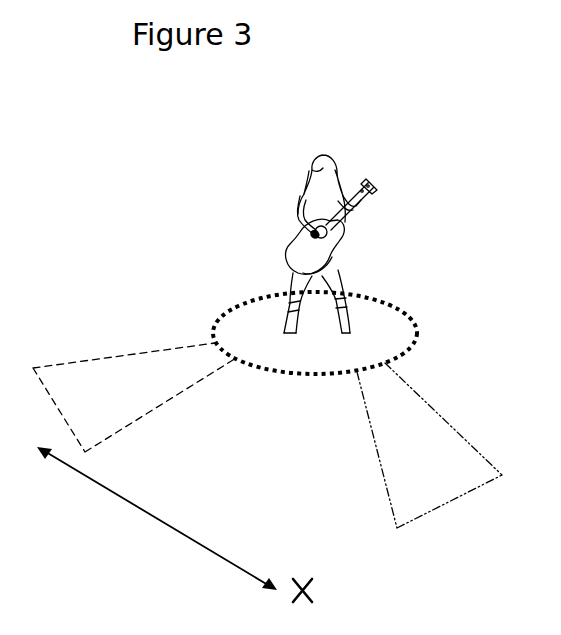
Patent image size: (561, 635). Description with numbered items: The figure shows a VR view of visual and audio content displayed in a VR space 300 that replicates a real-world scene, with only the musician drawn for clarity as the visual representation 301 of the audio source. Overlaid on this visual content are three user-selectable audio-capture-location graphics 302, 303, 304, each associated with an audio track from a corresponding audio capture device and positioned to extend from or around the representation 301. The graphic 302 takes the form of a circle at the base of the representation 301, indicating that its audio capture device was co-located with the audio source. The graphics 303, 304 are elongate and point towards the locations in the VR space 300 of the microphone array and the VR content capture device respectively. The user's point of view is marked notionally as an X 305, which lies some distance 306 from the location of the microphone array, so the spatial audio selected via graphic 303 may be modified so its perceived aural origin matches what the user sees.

The VR space 300 is at (190, 151).
The visual representation of the audio source 301 is at (323, 168).
The audio-capture-location graphic 302 is at (288, 375).
The audio-capture-location graphic 303 is at (108, 358).
The audio-capture-location graphic 304 is at (383, 483).
The point of view 305 is at (312, 592).
The distance 306 is at (172, 530).